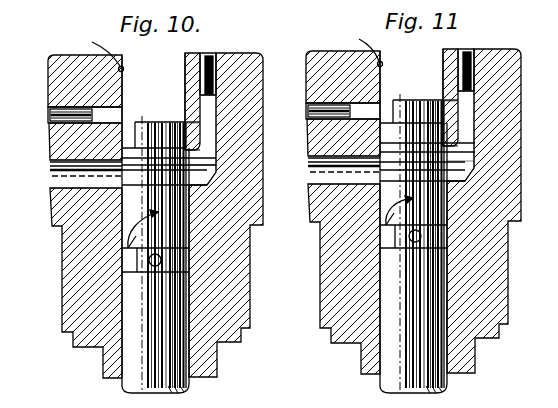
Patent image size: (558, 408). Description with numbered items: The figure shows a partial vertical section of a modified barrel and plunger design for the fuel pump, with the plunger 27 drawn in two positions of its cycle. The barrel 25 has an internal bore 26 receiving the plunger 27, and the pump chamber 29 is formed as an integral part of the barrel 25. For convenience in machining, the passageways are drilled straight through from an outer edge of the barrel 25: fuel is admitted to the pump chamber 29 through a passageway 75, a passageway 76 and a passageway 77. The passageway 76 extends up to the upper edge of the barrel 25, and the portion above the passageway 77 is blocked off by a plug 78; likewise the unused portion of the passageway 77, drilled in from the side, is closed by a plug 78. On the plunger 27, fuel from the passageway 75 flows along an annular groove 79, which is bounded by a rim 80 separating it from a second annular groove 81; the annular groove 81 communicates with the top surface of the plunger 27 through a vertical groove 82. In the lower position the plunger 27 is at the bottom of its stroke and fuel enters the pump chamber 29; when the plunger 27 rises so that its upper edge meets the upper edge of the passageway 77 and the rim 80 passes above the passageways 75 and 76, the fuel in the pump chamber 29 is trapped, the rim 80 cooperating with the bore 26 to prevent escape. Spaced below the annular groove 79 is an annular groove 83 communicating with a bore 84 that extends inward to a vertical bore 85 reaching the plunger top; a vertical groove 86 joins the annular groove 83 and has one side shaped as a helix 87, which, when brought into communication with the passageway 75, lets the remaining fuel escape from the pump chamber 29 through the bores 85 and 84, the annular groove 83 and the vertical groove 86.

In FIG. 10, the barrel 25 is at (245, 283).
In FIG. 11, the barrel 25 is at (504, 282).
In FIG. 10, the internal bore 26 is at (191, 314).
In FIG. 11, the internal bore 26 is at (449, 317).
In FIG. 10, the plunger 27 is at (140, 335).
In FIG. 11, the plunger 27 is at (399, 310).
In FIG. 10, the pump chamber 29 is at (96, 51).
In FIG. 11, the pump chamber 29 is at (359, 47).
In FIG. 10, the passageway 75 is at (52, 168).
In FIG. 11, the passageway 75 is at (317, 163).
In FIG. 10, the passageway 76 is at (210, 137).
In FIG. 11, the passageway 76 is at (469, 134).
In FIG. 10, the passageway 77 is at (186, 108).
In FIG. 11, the passageway 77 is at (446, 98).
In FIG. 10, the plug 78 is at (214, 58).
In FIG. 11, the plug 78 is at (522, 104).
In FIG. 10, the annular groove 79 is at (212, 191).
In FIG. 11, the annular groove 79 is at (475, 186).
In FIG. 10, the rim 80 is at (190, 169).
In FIG. 11, the rim 80 is at (459, 156).
In FIG. 10, the second annular groove 81 is at (201, 115).
In FIG. 11, the second annular groove 81 is at (459, 110).
In FIG. 10, the vertical groove 82 is at (142, 130).
In FIG. 11, the vertical groove 82 is at (397, 100).
In FIG. 10, the annular groove 83 is at (180, 258).
In FIG. 11, the annular groove 83 is at (439, 244).
In FIG. 10, the bore 84 is at (155, 267).
In FIG. 11, the bore 84 is at (414, 243).
In FIG. 10, the vertical bore 85 is at (192, 224).
In FIG. 11, the vertical bore 85 is at (450, 219).
In FIG. 10, the vertical groove 86 is at (148, 214).
In FIG. 11, the vertical groove 86 is at (469, 168).
In FIG. 10, the helix 87 is at (132, 240).
In FIG. 11, the helix 87 is at (387, 227).